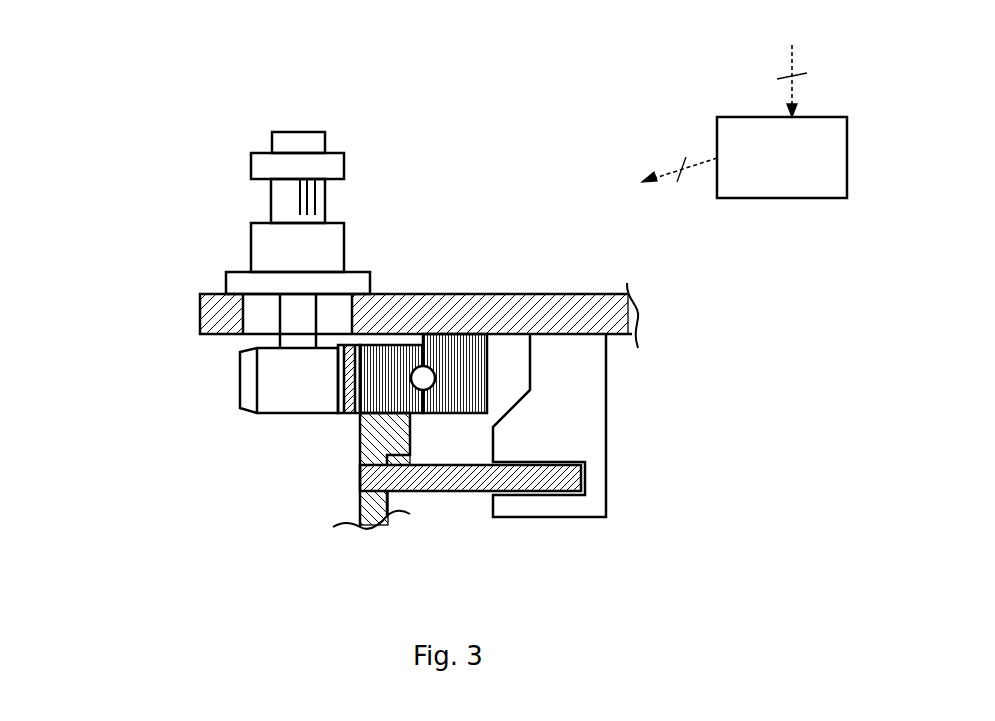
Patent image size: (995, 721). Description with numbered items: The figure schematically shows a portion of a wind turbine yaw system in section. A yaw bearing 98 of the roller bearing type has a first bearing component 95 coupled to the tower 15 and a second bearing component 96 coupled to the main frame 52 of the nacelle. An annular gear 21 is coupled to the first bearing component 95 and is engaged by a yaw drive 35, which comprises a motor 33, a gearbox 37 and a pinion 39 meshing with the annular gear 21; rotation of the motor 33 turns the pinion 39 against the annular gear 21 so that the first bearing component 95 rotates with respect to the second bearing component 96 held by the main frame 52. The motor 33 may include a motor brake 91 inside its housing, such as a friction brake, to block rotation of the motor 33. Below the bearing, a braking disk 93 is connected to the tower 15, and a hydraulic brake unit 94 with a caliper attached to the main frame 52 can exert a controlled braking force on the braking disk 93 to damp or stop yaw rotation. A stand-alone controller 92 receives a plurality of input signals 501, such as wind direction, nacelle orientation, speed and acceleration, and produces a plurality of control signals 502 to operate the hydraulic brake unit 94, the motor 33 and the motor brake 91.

The yaw drive 35 is at (146, 219).
The motor brake 91 is at (263, 153).
The motor 33 is at (287, 198).
The gearbox 37 is at (272, 255).
The main frame 52 is at (550, 310).
The pinion 39 is at (280, 388).
The annular gear 21 is at (350, 415).
The first bearing component 95 is at (383, 375).
The second bearing component 96 is at (452, 385).
The yaw bearing 98 is at (435, 336).
The tower 15 is at (362, 507).
The braking disk 93 is at (485, 493).
The hydraulic brake unit 94 is at (583, 423).
The controller 92 is at (782, 158).
The signals 501 is at (792, 64).
The signals 502 is at (667, 158).